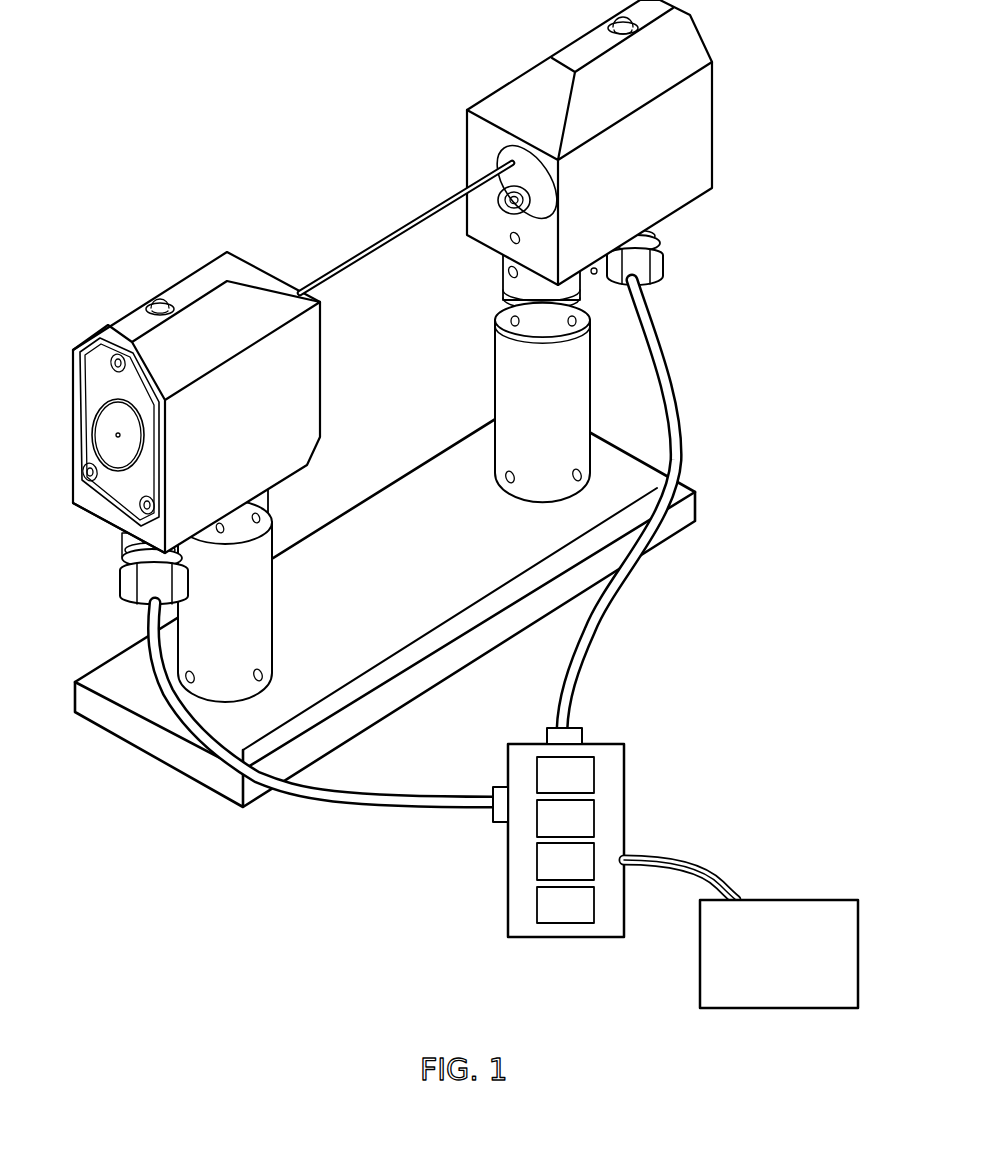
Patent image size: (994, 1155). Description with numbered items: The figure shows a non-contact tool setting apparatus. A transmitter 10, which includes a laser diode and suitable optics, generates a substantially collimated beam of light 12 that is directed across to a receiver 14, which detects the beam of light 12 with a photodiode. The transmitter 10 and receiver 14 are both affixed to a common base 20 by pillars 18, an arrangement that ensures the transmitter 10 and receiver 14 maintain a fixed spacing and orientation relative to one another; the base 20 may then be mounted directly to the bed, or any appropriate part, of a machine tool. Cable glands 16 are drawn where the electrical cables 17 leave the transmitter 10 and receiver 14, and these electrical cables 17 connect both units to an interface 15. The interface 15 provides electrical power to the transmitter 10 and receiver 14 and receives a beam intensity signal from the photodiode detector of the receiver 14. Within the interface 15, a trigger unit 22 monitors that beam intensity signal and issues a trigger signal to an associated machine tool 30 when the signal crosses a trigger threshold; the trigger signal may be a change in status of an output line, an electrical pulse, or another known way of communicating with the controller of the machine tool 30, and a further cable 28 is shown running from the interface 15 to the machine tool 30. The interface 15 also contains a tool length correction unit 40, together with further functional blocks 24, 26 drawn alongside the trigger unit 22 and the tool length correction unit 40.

The transmitter 10 is at (127, 313).
The beam of light 12 is at (388, 238).
The receiver 14 is at (680, 38).
The interface 15 is at (595, 832).
The cable gland 16 is at (143, 597).
The electrical cables 17 is at (558, 697).
The pillars 18 is at (255, 598).
The base 20 is at (567, 588).
The trigger unit 22 is at (581, 788).
The processing module 24 is at (581, 832).
The processing module 26 is at (581, 875).
The output cable 28 is at (703, 863).
The machine tool 30 is at (795, 967).
The tool length correction unit 40 is at (581, 918).